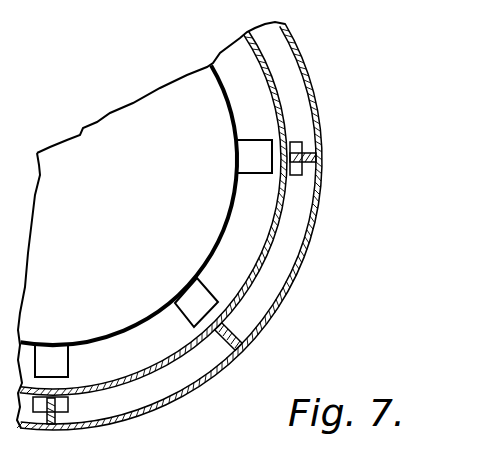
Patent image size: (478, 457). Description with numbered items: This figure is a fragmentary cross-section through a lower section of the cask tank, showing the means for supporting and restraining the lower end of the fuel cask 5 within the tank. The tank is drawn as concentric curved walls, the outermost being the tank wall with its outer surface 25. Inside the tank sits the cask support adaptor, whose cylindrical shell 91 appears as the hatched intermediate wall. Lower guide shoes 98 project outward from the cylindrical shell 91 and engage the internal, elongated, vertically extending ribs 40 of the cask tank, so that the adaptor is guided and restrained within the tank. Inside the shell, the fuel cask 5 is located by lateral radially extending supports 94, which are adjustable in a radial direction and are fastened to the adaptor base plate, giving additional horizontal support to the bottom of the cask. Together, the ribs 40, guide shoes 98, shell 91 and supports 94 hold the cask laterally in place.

The fuel cask 5 is at (163, 308).
The outer surface of the tank 25 is at (260, 333).
The internal vertical extending ribs 40 is at (223, 337).
The cylindrical shell 91 is at (253, 287).
The lateral radially extending supports 94 is at (254, 139).
The lower guide shoes 98 is at (296, 175).